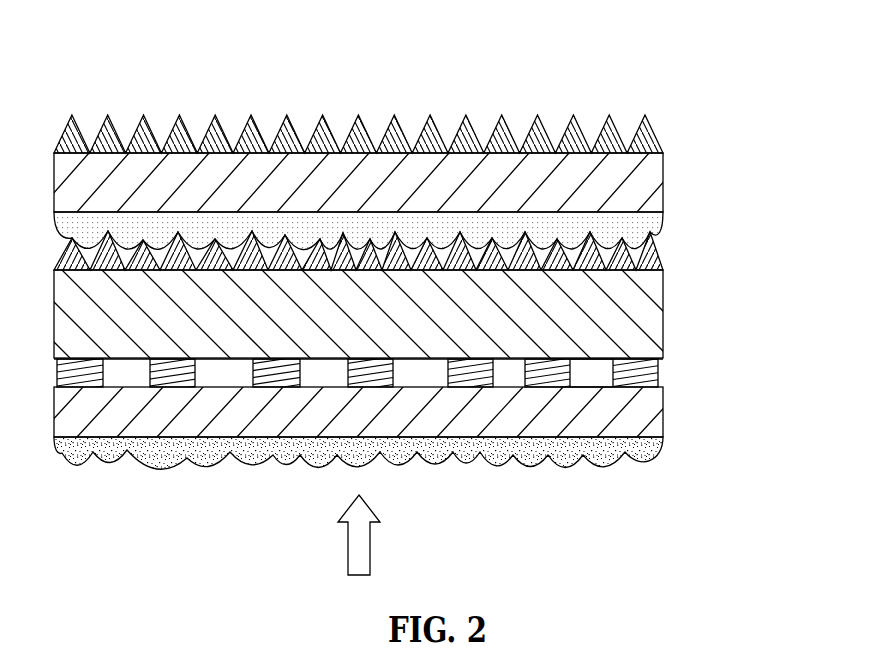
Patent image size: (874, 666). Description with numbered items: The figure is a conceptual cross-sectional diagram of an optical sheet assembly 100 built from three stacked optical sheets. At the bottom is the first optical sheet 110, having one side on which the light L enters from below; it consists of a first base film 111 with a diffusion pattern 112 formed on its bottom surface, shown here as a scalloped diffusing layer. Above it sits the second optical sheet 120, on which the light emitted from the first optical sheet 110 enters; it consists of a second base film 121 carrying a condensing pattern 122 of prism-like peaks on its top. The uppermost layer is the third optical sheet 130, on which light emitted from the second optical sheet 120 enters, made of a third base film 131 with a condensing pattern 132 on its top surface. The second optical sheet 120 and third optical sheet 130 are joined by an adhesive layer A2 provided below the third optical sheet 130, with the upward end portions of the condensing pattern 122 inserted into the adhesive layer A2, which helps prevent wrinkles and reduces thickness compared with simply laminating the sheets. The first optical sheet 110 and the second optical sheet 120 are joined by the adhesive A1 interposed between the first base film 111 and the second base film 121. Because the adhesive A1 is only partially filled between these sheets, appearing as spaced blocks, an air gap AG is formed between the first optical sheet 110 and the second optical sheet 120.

The optical sheet assembly 100 is at (374, 51).
The third optical sheet 130 is at (406, 163).
The condensing pattern 132 is at (655, 131).
The third base film 131 is at (663, 182).
The adhesive layer A2 is at (659, 228).
The second optical sheet 120 is at (406, 294).
The condensing pattern 122 is at (656, 249).
The second base film 121 is at (663, 325).
The adhesive A1 is at (660, 378).
The air gap AG is at (592, 373).
The first optical sheet 110 is at (406, 430).
The first base film 111 is at (663, 405).
The diffusion pattern 112 is at (650, 458).
The light L is at (370, 547).